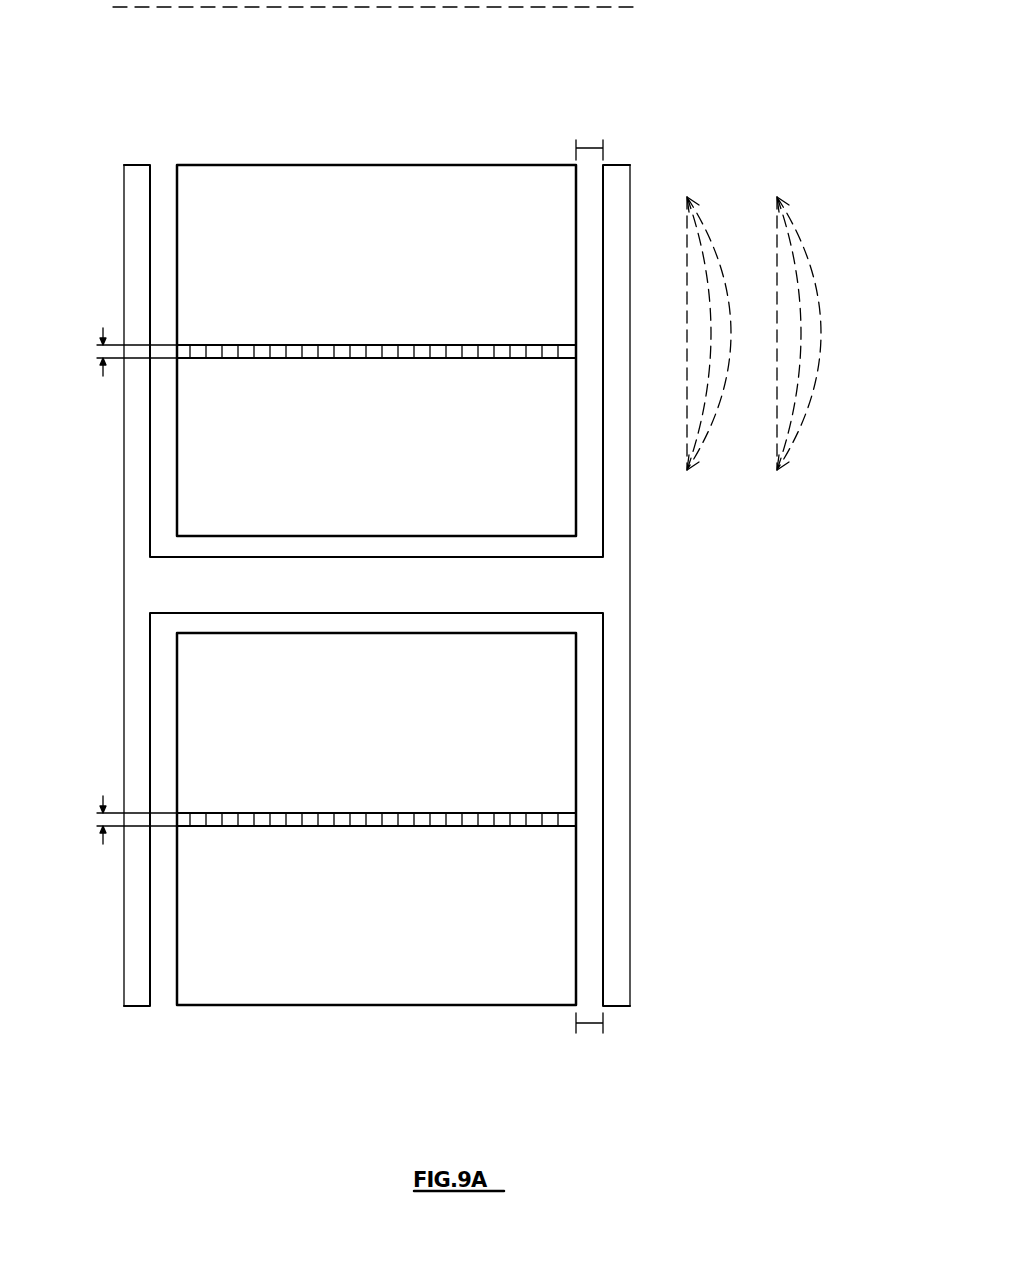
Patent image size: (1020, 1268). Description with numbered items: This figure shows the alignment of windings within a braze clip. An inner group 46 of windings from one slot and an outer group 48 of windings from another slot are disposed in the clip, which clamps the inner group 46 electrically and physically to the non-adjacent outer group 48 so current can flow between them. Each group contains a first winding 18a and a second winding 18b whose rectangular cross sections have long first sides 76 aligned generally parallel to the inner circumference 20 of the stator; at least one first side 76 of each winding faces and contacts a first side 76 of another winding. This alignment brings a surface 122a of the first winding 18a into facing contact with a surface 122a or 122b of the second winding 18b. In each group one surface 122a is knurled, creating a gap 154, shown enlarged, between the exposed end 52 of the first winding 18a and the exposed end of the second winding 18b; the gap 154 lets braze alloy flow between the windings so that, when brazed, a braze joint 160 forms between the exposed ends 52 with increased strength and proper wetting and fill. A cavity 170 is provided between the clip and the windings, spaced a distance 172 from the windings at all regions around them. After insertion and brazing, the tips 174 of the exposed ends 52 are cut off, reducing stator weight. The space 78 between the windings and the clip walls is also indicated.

The inner circumference 20 is at (165, 8).
The inner group 46 is at (553, 112).
The outer group 48 is at (200, 1072).
The exposed end 52 is at (207, 160).
The first side 76 is at (397, 160).
The gap 78 is at (172, 276).
The first winding 18a is at (430, 520).
The second winding 18b is at (456, 184).
The knurled surface 122a is at (484, 343).
The surface 122b is at (496, 165).
The gap 154 is at (103, 352).
The braze joint 160 is at (542, 1075).
The cavity 170 is at (533, 553).
The distance 172 is at (589, 148).
The tips 174 is at (800, 222).